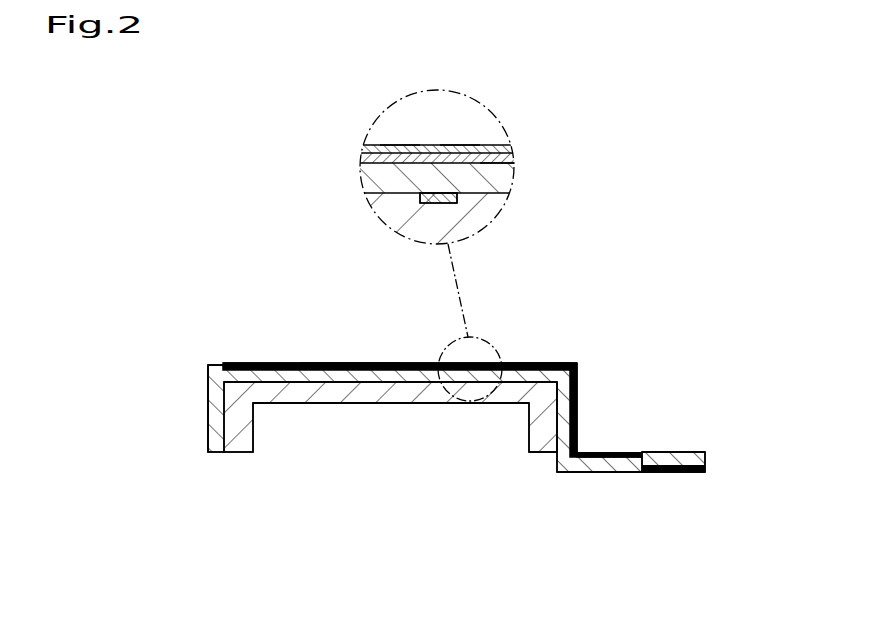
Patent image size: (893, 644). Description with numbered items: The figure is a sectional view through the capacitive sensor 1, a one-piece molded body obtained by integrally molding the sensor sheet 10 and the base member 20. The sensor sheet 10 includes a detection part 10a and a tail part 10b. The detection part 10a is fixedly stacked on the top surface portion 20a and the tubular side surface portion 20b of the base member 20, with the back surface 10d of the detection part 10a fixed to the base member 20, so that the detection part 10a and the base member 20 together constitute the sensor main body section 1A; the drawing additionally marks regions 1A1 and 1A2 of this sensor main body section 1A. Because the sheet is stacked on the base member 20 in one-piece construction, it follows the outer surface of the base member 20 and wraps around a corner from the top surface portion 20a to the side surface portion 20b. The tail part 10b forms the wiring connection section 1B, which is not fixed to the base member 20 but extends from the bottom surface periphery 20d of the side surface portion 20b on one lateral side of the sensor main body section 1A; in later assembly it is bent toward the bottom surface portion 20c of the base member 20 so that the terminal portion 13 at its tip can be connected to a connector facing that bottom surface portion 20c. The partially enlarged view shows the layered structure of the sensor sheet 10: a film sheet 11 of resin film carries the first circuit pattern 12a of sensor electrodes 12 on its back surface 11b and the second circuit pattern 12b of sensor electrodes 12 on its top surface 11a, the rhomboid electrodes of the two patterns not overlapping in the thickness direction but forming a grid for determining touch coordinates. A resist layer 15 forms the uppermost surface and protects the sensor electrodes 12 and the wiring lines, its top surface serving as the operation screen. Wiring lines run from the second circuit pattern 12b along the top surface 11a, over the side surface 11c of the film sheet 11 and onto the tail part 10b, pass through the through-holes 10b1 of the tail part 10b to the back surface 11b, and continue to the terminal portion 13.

The capacitive sensor 1 is at (632, 325).
The sensor main body section 1A is at (247, 365).
The first region 1A1 is at (402, 145).
The second region 1A2 is at (207, 383).
The wiring connection section 1B is at (668, 452).
The sensor sheet 10 is at (207, 404).
The detection part 10a is at (303, 363).
The tail part 10b is at (693, 452).
The through-holes 10b1 is at (637, 473).
The back surface 10d is at (295, 385).
The film sheet 11 is at (360, 174).
The top surface 11a is at (361, 147).
The back surface 11b is at (373, 200).
The side surface 11c is at (207, 436).
The sensor electrodes 12 is at (437, 178).
The first circuit pattern 12a is at (447, 208).
The second circuit pattern 12b is at (512, 176).
The terminal portion 13 is at (677, 473).
The resist layer 15 is at (467, 145).
The base member 20 is at (238, 453).
The top surface portion 20a is at (523, 363).
The side surface portion 20b is at (562, 416).
The bottom surface portion 20c is at (448, 404).
The bottom surface periphery 20d is at (553, 455).